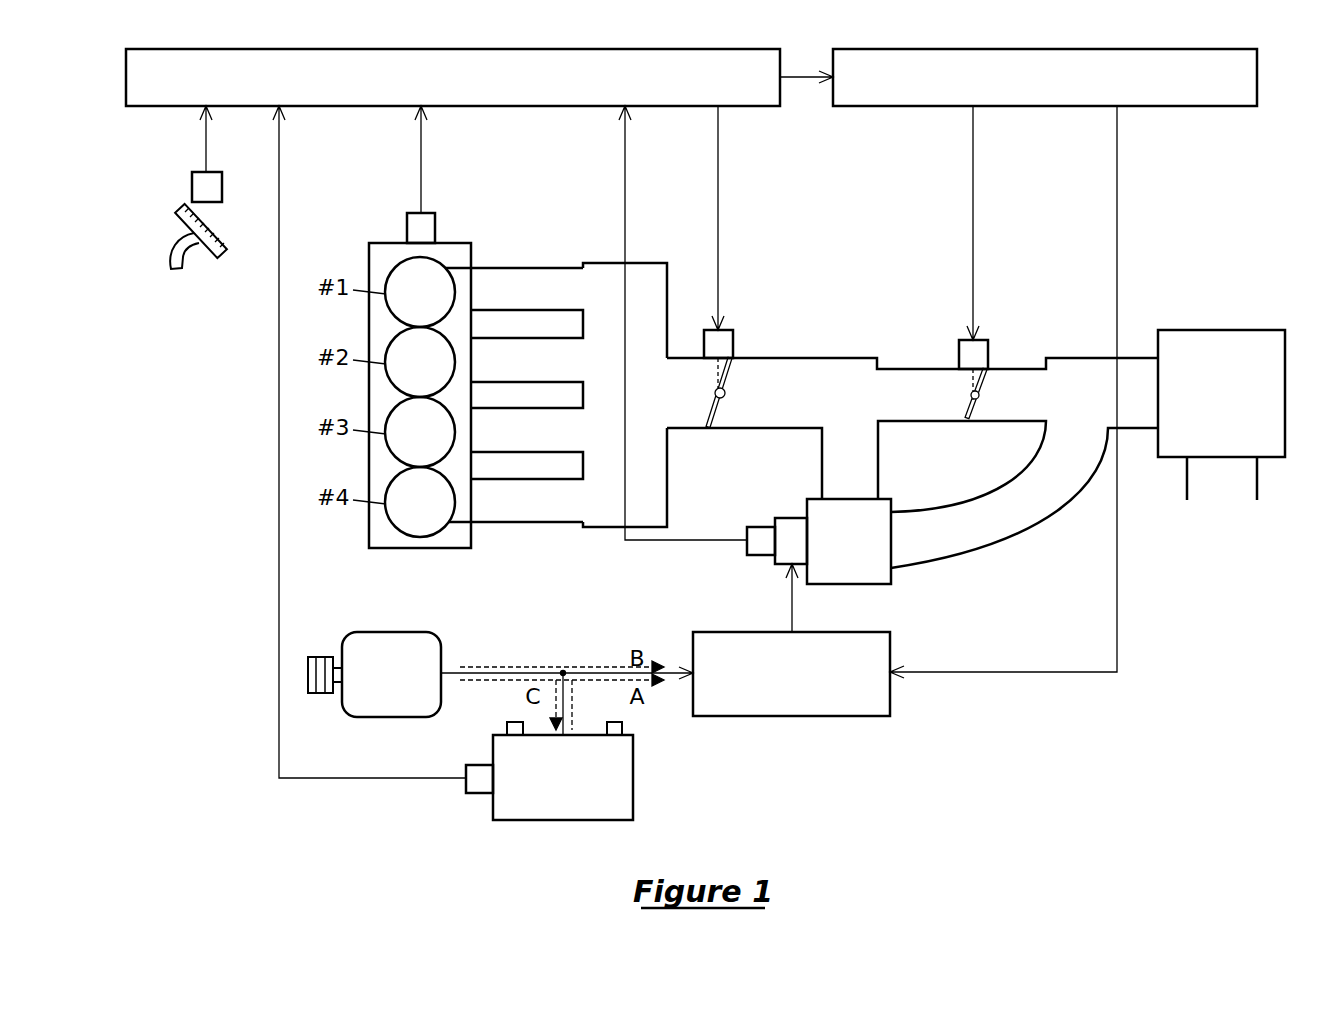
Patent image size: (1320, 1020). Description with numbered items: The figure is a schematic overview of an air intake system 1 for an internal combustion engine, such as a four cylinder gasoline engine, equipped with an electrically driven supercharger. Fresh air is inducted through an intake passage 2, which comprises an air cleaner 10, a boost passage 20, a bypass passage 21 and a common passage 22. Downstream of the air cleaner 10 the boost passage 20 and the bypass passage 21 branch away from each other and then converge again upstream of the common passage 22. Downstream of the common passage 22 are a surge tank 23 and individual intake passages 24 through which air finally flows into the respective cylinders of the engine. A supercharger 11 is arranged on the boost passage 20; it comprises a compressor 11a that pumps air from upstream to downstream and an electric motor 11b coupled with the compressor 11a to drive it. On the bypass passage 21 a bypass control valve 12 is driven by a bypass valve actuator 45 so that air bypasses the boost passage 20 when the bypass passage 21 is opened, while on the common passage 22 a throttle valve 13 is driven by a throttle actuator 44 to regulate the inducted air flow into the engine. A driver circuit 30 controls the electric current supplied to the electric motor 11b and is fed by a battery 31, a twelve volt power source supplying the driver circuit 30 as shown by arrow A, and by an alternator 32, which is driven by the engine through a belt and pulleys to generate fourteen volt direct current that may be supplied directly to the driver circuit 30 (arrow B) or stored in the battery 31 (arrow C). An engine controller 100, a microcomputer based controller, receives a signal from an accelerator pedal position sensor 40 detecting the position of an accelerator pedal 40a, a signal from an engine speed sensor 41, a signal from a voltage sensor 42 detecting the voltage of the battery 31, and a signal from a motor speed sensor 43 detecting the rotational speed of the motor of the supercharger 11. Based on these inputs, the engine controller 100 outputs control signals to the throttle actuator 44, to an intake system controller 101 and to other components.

The air intake system 1 is at (1222, 230).
The intake passage 2 is at (860, 347).
The air cleaner 10 is at (1217, 330).
The supercharger 11 is at (819, 548).
The compressor 11a is at (790, 515).
The electric motor 11b is at (870, 585).
The bypass control valve 12 is at (985, 378).
The throttle valve 13 is at (730, 380).
The boost passage 20 is at (995, 552).
The bypass passage 21 is at (932, 421).
The common passage 22 is at (735, 430).
The surge tank 23 is at (655, 262).
The individual intake passages 24 is at (520, 335).
The driver circuit 30 is at (780, 716).
The battery 31 is at (637, 777).
The alternator 32 is at (413, 631).
The accelerator pedal position sensor 40 is at (192, 183).
The accelerator pedal 40a is at (205, 260).
The engine speed sensor 41 is at (405, 222).
The voltage sensor 42 is at (473, 763).
The motor speed sensor 43 is at (750, 528).
The throttle actuator 44 is at (733, 341).
The bypass valve actuator 45 is at (988, 343).
The engine controller 100 is at (508, 107).
The intake system controller 101 is at (1047, 107).